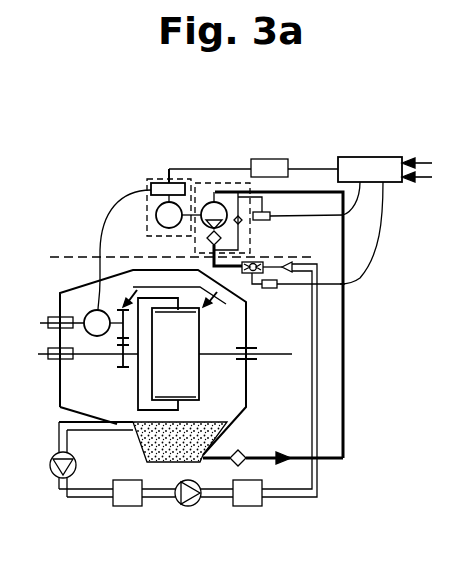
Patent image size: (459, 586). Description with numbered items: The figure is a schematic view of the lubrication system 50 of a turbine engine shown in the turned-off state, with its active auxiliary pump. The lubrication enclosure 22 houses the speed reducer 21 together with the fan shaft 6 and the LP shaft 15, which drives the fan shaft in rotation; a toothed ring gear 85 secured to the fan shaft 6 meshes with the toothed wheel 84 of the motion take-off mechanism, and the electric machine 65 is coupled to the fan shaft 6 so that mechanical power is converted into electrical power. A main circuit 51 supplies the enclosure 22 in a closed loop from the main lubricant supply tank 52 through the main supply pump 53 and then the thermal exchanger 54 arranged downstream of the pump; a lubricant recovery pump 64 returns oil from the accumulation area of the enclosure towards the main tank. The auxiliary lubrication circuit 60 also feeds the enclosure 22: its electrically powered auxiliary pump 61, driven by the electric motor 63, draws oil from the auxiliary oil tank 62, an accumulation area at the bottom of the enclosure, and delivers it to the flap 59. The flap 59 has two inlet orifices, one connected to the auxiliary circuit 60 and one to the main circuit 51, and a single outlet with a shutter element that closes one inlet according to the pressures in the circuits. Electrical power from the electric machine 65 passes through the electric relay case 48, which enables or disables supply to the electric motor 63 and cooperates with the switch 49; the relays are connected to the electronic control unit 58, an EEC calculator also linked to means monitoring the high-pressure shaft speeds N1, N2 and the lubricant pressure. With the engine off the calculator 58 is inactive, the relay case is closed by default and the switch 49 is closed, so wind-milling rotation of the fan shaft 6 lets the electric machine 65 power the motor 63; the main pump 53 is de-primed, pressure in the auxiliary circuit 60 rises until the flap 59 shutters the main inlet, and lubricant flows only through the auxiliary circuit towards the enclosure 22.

The lubrication system 50 is at (40, 216).
The electric relay case 48 is at (163, 183).
The electric motor 63 is at (156, 213).
The toothed wheel 84 is at (104, 310).
The electric machine 65 is at (94, 310).
The fan shaft 6 is at (62, 361).
The toothed ring gear 85 is at (118, 358).
The lubrication enclosure 22 is at (144, 355).
The LP shaft 15 is at (278, 356).
The speed reducer 21 is at (222, 385).
The switch 49 is at (272, 159).
The auxiliary lubricant supply pump 61 is at (262, 236).
The electronic control unit 58 is at (388, 157).
The speed of the high-pressure shaft N1 is at (428, 162).
The speed of the high-pressure shaft N2 is at (428, 178).
The flap 59 is at (287, 253).
The auxiliary lubrication circuit 60 is at (343, 322).
The main circuit 51 is at (305, 497).
The thermal exchanger 54 is at (260, 503).
The main supply pump 53 is at (199, 505).
The main lubricant supply tank 52 is at (115, 502).
The lubricant recovery pump 64 is at (50, 472).
The auxiliary oil tank 62 is at (163, 450).